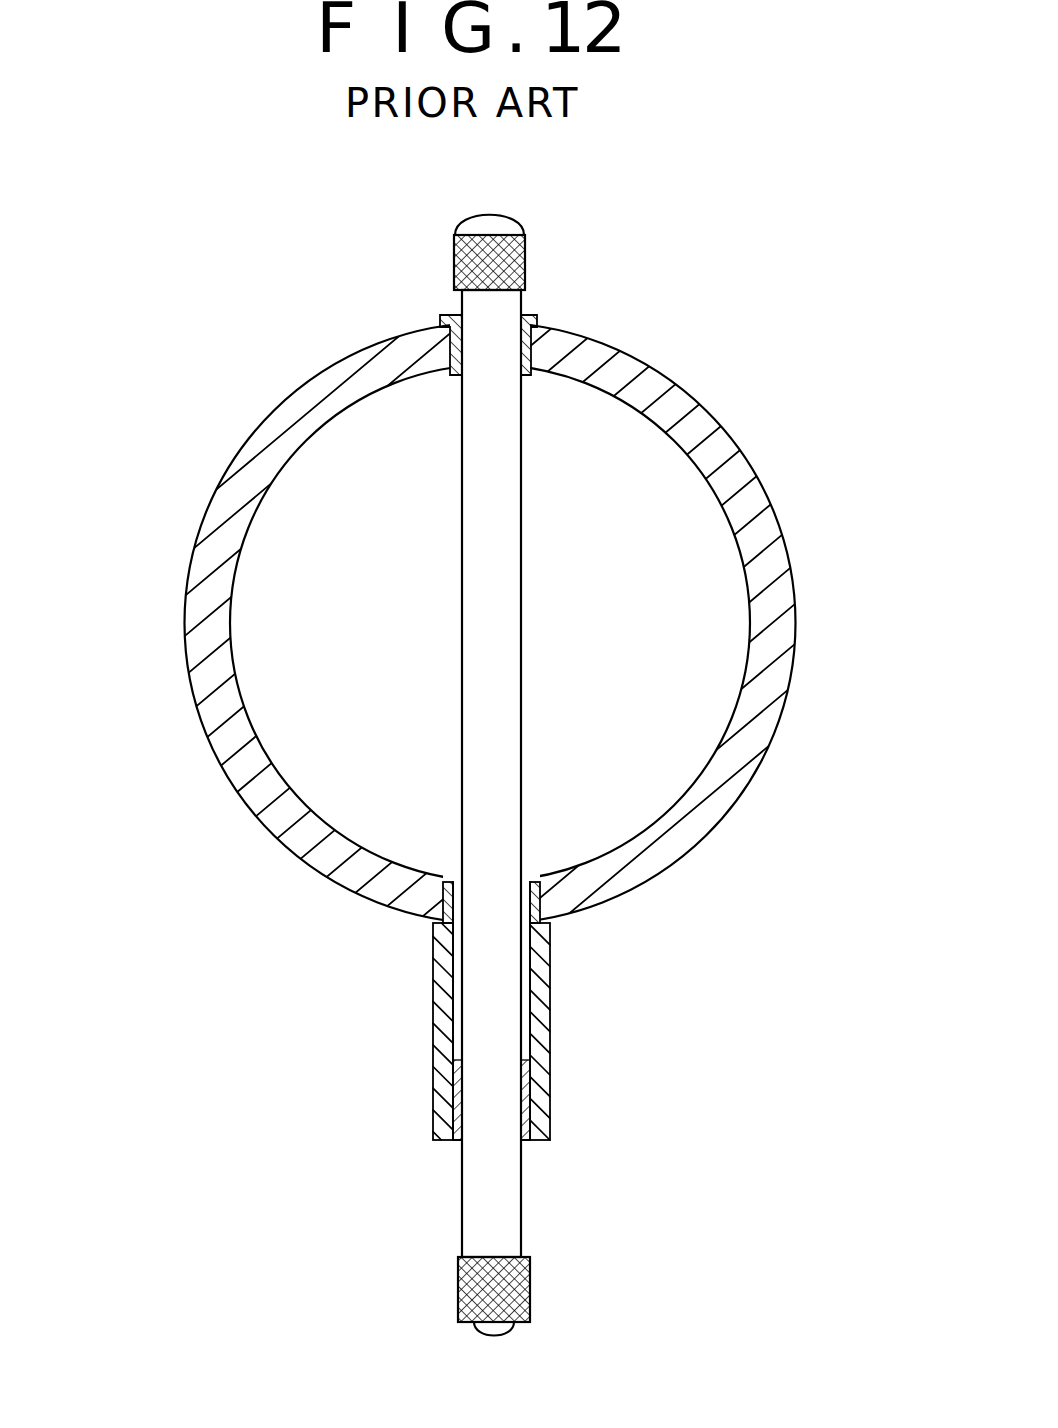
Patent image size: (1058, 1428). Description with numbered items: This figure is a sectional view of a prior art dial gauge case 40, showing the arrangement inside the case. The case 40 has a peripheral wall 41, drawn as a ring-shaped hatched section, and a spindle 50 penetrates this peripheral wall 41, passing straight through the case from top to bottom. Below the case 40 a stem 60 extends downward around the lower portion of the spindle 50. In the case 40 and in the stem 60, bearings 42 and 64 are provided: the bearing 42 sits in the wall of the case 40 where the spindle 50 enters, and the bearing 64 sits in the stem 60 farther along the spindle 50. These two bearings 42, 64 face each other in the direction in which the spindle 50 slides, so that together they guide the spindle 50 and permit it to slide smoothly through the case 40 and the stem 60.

The dial gauge case 40 is at (479, 673).
The peripheral wall 41 is at (760, 530).
The bearing 42 is at (531, 347).
The spindle 50 is at (500, 481).
The stem 60 is at (540, 987).
The bearing 64 is at (540, 1093).